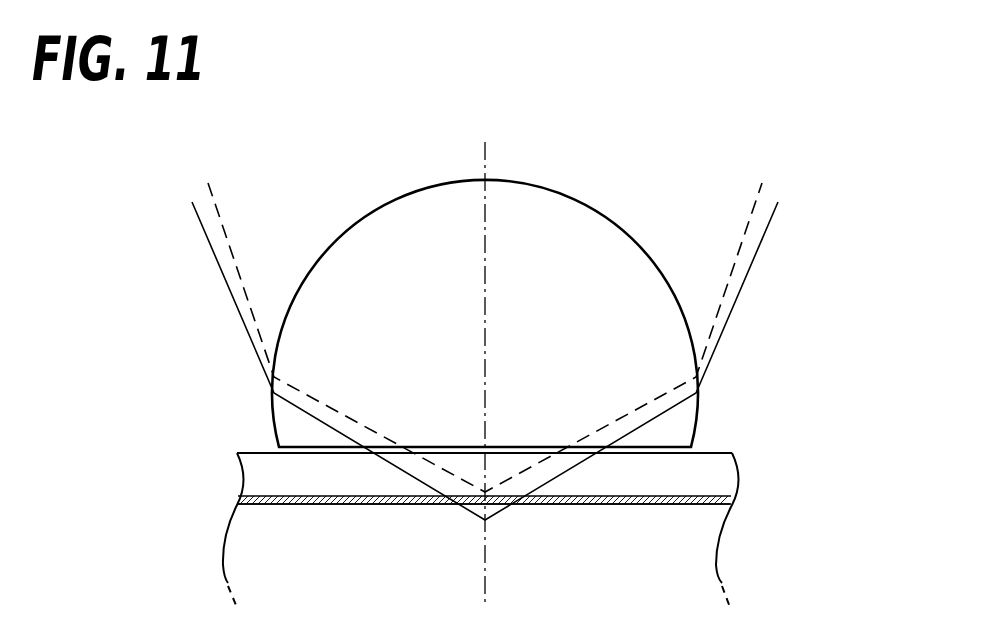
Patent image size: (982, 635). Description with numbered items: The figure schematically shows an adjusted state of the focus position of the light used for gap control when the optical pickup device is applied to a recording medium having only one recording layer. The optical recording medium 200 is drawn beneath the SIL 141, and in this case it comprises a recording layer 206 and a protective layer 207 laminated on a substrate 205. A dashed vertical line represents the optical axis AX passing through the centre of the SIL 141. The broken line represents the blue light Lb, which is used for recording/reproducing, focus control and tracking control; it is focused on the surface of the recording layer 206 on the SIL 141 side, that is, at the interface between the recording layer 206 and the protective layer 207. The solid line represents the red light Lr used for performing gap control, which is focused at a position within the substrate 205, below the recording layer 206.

The SIL 141 is at (385, 200).
The optical recording medium 200 is at (240, 436).
The substrate 205 is at (250, 532).
The recording layer 206 is at (688, 497).
The protective layer 207 is at (253, 480).
The optical axis AX is at (483, 360).
The blue light Lb is at (745, 228).
The red light Lr is at (752, 262).